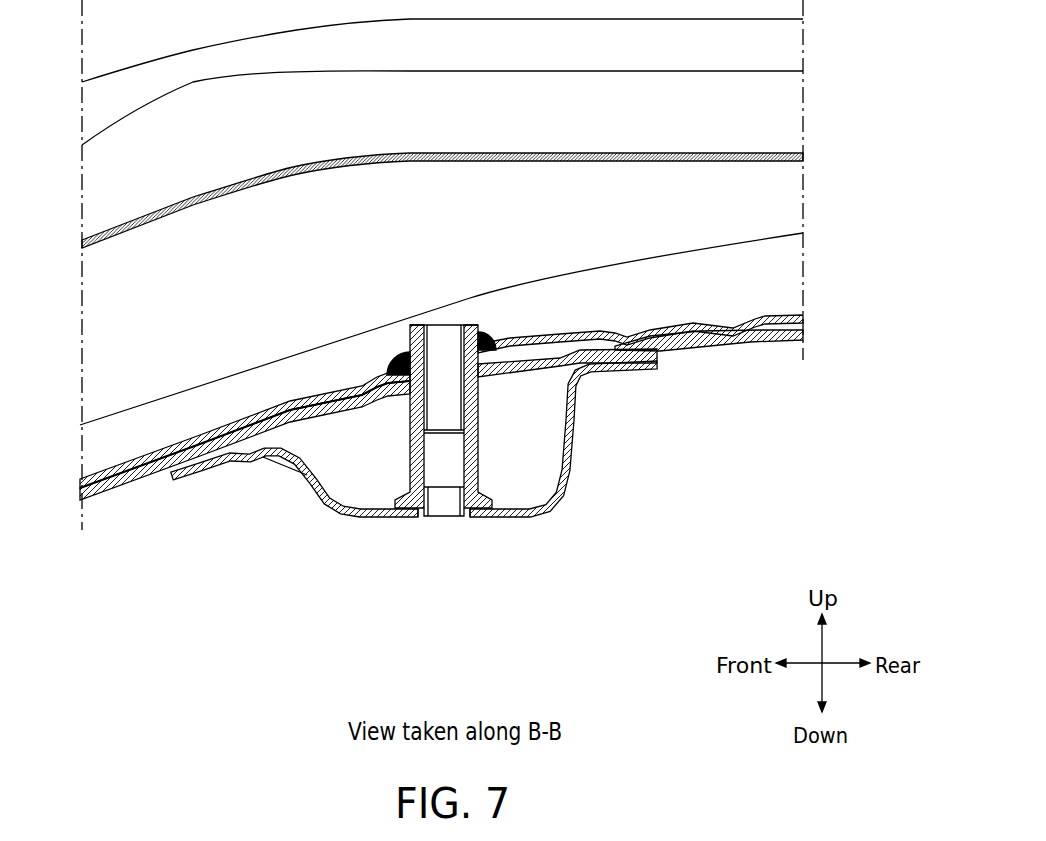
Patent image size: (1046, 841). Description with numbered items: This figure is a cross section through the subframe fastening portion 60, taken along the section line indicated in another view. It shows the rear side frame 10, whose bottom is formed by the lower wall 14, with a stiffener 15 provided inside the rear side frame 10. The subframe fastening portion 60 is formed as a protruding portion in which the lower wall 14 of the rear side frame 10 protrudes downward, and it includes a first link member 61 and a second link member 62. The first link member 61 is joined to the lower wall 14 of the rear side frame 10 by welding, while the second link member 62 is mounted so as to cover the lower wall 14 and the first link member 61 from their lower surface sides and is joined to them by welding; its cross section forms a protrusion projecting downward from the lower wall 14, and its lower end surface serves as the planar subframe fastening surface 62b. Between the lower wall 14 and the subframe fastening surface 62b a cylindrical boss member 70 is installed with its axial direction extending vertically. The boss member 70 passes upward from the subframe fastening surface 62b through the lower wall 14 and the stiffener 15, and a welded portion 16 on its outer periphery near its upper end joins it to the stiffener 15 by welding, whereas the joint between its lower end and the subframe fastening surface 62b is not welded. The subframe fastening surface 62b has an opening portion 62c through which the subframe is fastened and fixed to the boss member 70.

The rear side frame 10 is at (757, 342).
The lower wall 14 is at (133, 481).
The stiffener 15 is at (768, 318).
The welded portion 16 is at (403, 352).
The subframe fastening portion 60 is at (426, 464).
The first link member 61 is at (512, 383).
The second link member 62 is at (426, 482).
The subframe fastening surface 62b is at (370, 518).
The opening portion 62c is at (427, 518).
The boss member 70 is at (482, 513).